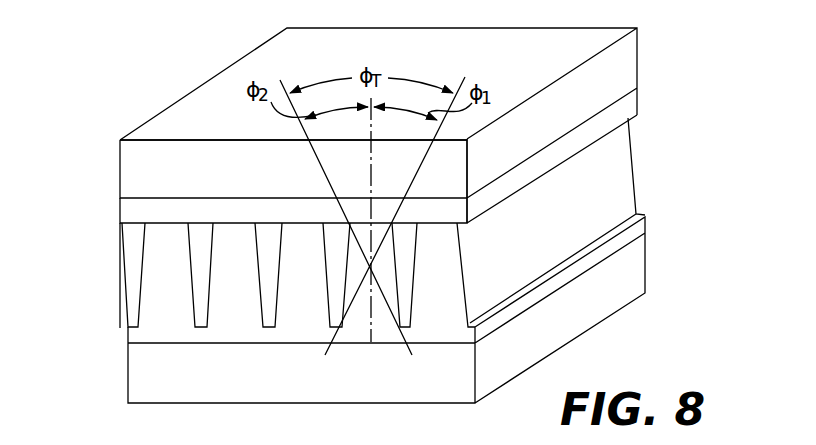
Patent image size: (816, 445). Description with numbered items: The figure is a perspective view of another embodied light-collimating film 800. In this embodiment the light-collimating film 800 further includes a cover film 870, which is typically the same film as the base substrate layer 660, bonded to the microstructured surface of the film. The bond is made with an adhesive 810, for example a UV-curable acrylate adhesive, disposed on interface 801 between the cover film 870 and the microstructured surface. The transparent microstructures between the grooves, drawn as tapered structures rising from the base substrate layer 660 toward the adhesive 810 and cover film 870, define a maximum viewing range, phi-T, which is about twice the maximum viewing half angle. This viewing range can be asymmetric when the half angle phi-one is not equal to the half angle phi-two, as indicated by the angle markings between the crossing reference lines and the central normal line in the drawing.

The light-collimating film 800 is at (207, 57).
The cover film 870 is at (270, 179).
The adhesive 810 is at (133, 209).
The interface 801 is at (165, 203).
The base substrate layer 660 is at (297, 381).